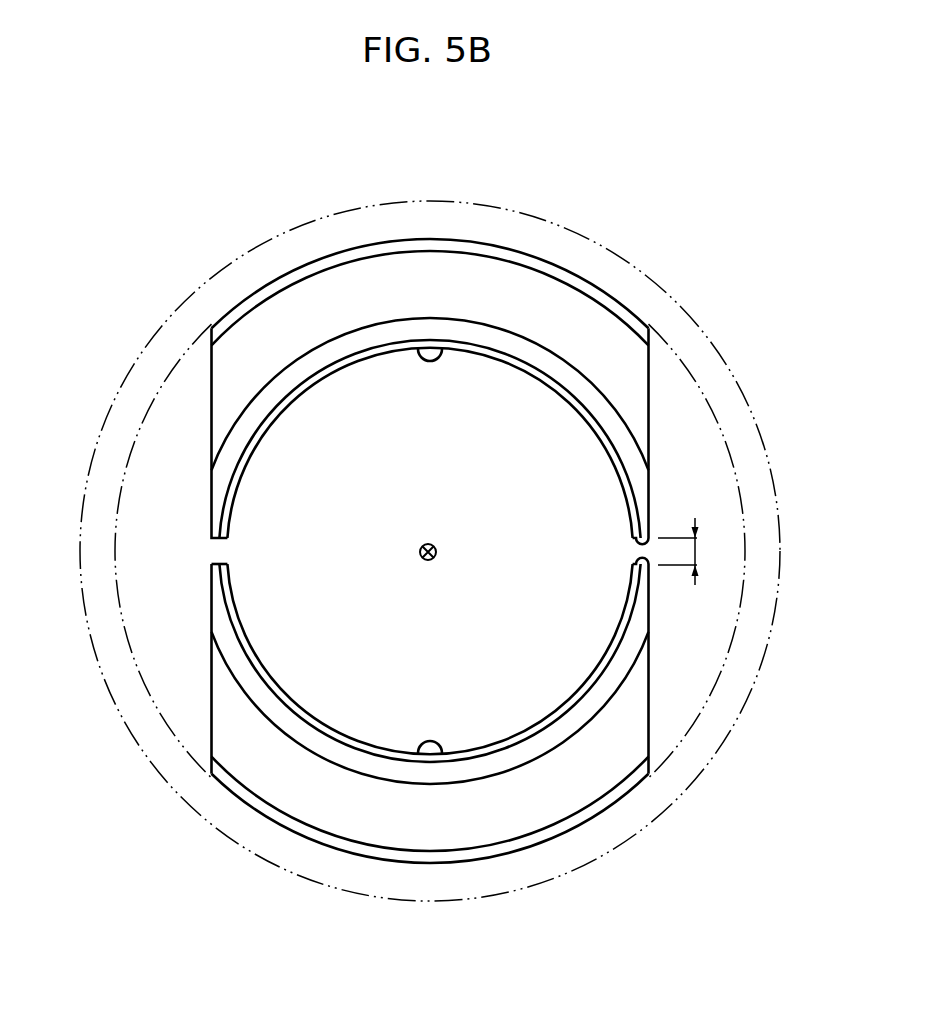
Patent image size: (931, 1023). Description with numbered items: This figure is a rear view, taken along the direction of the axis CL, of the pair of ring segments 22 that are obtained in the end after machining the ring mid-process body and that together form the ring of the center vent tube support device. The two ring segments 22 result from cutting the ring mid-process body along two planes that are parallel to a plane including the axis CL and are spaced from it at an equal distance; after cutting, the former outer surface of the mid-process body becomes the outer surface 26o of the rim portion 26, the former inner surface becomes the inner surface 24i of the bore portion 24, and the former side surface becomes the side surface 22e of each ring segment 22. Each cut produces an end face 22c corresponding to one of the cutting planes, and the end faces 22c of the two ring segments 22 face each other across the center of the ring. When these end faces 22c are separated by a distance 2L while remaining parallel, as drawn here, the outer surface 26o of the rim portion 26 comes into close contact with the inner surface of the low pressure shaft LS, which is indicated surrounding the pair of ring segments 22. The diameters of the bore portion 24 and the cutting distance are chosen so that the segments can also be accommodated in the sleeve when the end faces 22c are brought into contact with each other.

The ring segment 22 is at (447, 557).
The side surface 22e is at (208, 388).
The end face 22c is at (652, 533).
The bore portion 24 is at (430, 557).
The inner surface 24i is at (445, 348).
The rim portion 26 is at (441, 555).
The outer surface 26o is at (543, 259).
The low pressure shaft LS is at (690, 318).
The distance 2L is at (696, 551).
The axis CL is at (428, 534).